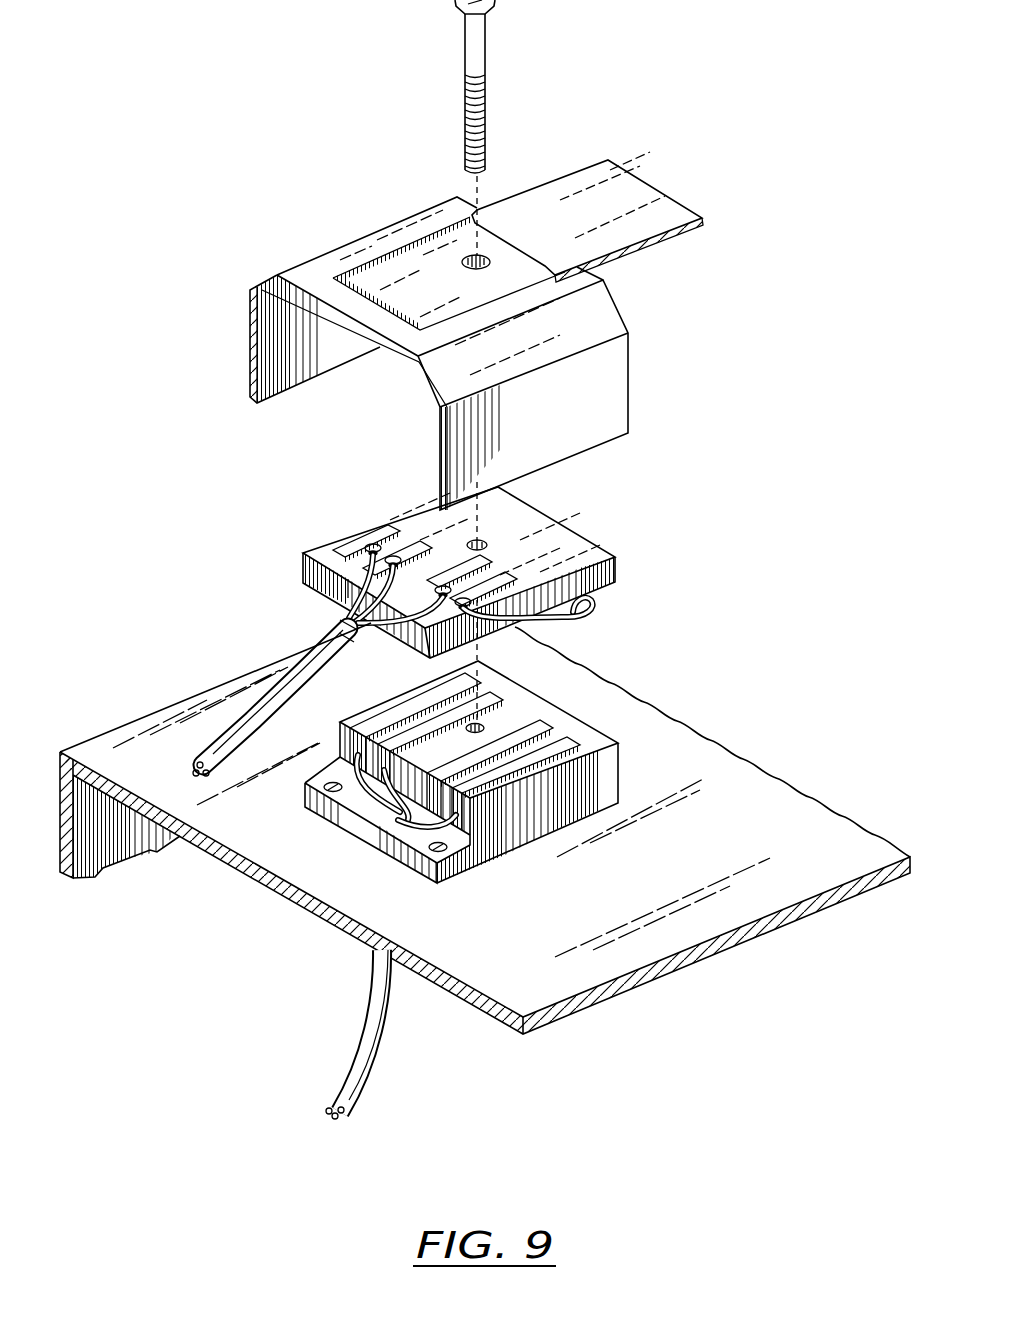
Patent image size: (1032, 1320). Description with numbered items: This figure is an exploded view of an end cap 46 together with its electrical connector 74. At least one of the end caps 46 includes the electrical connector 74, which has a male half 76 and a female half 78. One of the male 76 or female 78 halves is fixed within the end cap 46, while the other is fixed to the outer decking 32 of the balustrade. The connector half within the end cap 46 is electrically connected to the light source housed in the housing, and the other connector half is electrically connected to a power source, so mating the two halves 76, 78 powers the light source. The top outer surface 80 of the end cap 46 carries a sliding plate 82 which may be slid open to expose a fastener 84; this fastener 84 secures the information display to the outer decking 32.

The outer decking 32 is at (790, 800).
The end cap 46 is at (479, 255).
The electrical connector 74 is at (487, 682).
The male half 76 is at (597, 540).
The female half 78 is at (620, 775).
The top outer surface 80 is at (300, 272).
The sliding plate 82 is at (643, 184).
The fastener 84 is at (487, 51).